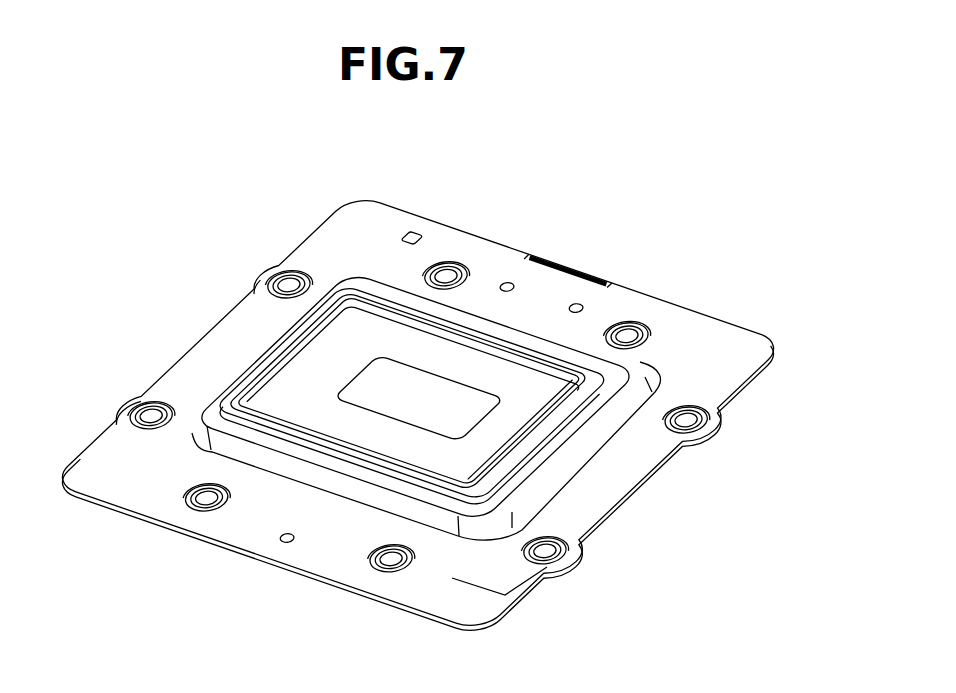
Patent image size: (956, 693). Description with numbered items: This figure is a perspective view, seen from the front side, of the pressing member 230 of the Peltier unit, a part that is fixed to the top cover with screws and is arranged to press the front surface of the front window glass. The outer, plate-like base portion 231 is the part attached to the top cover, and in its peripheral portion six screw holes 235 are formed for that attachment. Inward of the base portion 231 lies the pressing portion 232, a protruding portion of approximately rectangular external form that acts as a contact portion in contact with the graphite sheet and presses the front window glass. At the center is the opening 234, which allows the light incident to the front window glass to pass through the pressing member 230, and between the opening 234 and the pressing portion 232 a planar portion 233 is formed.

The pressing member 230 is at (422, 405).
The base portion 231 is at (422, 417).
The pressing portion 232 is at (411, 396).
The planar portion 233 is at (414, 393).
The opening 234 is at (419, 398).
The screw holes 235 is at (418, 416).